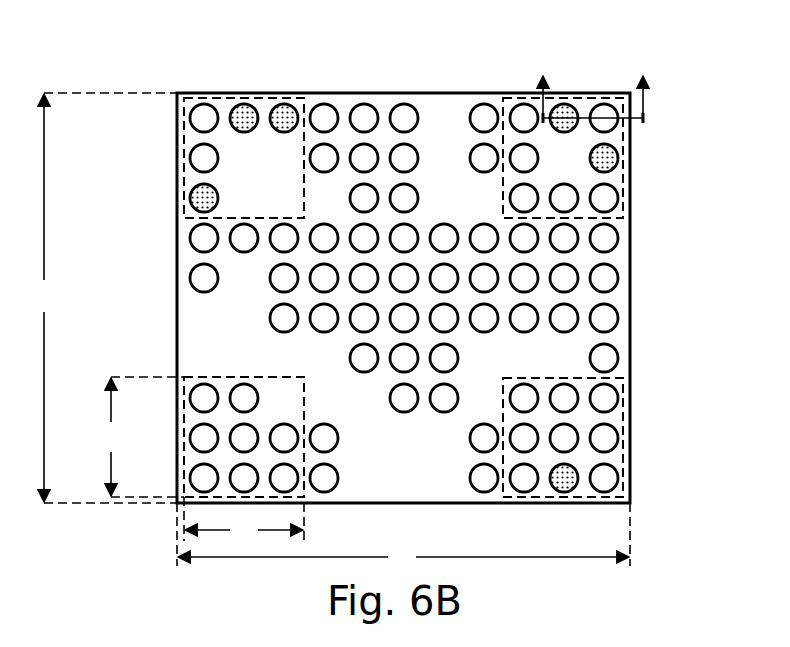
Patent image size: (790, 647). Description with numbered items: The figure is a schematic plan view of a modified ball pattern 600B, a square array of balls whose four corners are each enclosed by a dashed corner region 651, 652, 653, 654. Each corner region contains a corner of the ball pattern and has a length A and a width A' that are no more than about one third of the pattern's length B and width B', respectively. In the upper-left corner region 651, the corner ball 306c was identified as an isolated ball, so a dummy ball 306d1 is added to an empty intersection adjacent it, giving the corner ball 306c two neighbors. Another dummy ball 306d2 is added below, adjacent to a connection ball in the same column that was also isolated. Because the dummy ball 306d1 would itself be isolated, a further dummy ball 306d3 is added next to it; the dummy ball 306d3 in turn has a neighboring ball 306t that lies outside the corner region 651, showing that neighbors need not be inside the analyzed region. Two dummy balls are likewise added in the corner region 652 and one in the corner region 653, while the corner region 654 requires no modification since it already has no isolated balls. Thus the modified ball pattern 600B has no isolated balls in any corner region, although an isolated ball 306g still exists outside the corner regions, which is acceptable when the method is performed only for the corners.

The modified ball pattern 600B is at (780, 51).
The isolated ball 306g is at (206, 291).
The dummy ball 306d1 is at (243, 110).
The further dummy ball 306d3 is at (283, 110).
The neighboring ball 306t is at (328, 115).
The corner ball 306c is at (203, 158).
The dummy ball 306d2 is at (204, 198).
The corner region 651 is at (168, 118).
The corner region 652 is at (624, 158).
The corner region 653 is at (624, 437).
The corner region 654 is at (183, 398).